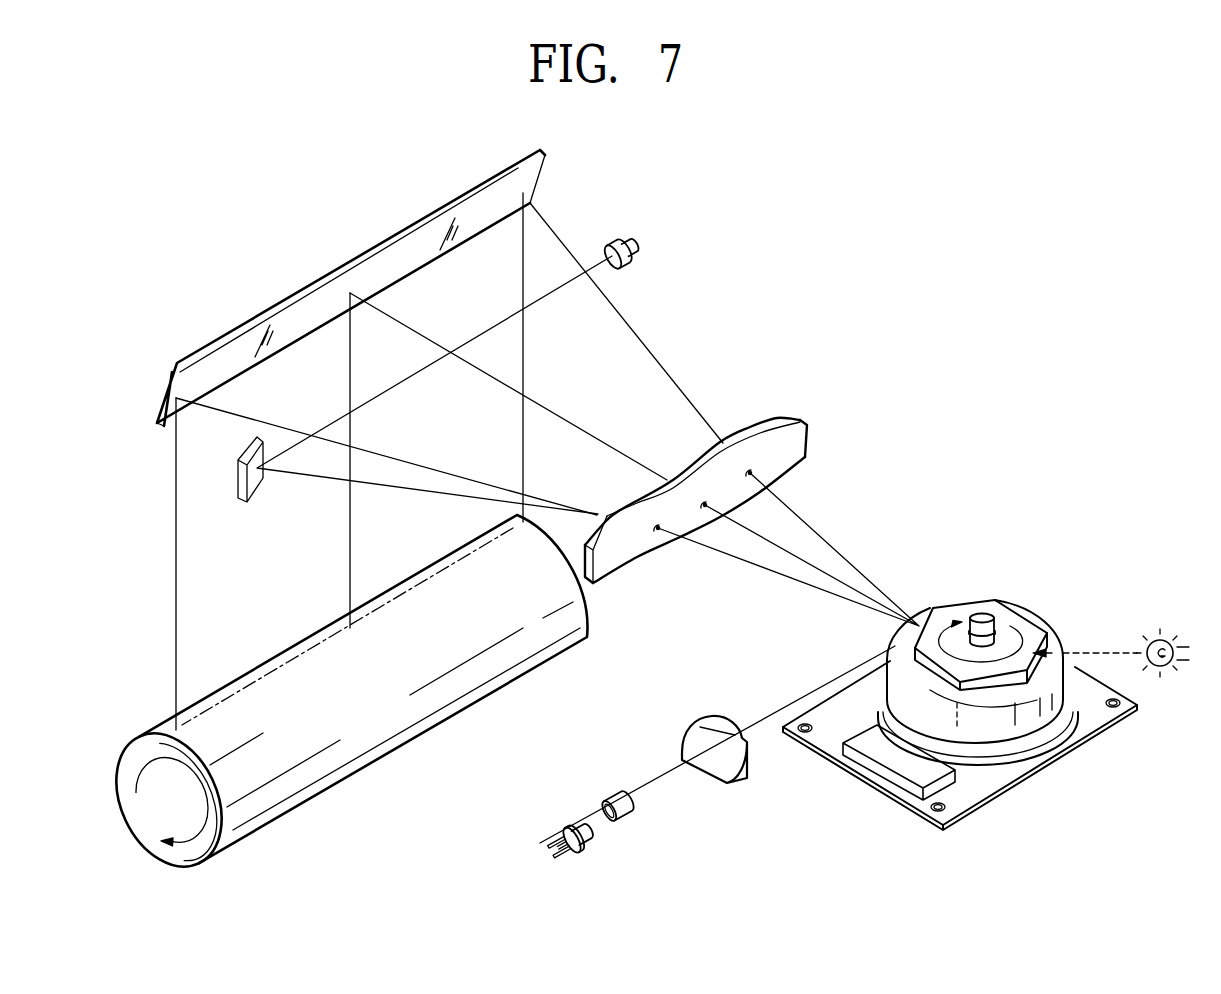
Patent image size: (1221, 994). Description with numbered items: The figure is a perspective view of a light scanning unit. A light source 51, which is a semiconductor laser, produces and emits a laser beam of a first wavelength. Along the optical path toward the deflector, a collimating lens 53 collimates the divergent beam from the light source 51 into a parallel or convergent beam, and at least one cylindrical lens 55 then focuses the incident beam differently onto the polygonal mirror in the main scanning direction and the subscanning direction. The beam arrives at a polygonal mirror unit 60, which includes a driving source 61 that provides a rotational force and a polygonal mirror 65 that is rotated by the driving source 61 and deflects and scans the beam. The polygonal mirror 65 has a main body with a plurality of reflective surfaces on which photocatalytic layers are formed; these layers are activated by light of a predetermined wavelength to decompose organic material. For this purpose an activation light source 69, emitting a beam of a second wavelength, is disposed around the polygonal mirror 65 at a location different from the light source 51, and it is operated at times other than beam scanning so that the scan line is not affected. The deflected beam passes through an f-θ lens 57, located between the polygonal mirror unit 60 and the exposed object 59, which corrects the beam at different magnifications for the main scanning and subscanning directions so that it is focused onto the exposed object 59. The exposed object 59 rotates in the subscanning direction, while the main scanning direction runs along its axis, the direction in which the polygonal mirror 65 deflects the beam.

The light source 51 is at (583, 813).
The collimating lens 53 is at (615, 793).
The cylindrical lens 55 is at (703, 718).
The f-θ lens 57 is at (752, 435).
The exposed object 59 is at (268, 658).
The polygonal mirror unit 60 is at (960, 667).
The driving source 61 is at (1057, 642).
The polygonal mirror 65 is at (1029, 630).
The activation light source 69 is at (1160, 638).